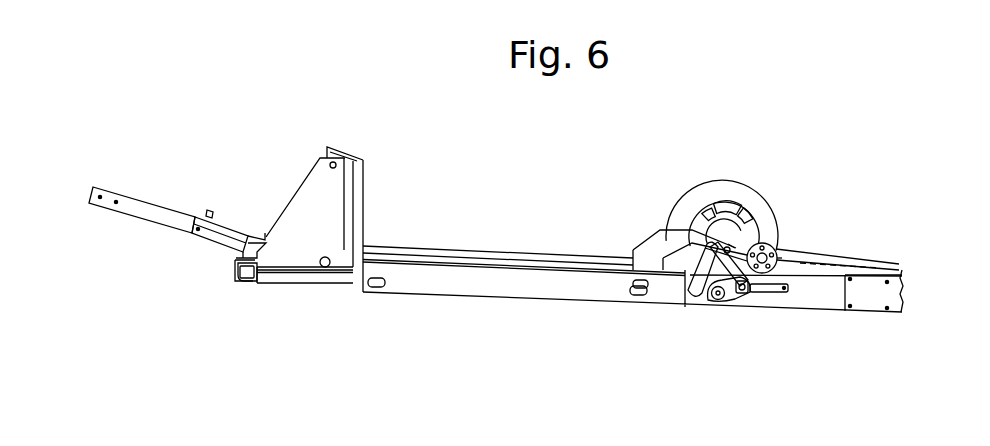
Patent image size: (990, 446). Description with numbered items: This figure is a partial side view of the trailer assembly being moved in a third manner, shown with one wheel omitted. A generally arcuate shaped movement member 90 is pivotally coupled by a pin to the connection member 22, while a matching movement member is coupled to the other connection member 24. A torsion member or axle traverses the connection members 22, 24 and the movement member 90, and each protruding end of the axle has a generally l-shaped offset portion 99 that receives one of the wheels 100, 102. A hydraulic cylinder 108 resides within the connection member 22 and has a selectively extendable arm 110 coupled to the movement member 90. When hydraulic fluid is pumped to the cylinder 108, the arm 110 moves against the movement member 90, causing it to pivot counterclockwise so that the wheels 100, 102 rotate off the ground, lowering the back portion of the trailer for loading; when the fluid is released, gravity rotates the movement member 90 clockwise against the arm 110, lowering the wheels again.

The connection member 24 is at (650, 238).
The wheel 102 is at (713, 212).
The wheel 100 is at (768, 243).
The connection member 22 is at (798, 252).
The hydraulic cylinder 108 is at (845, 268).
The offset portion 99 is at (748, 300).
The movement member 90 is at (726, 297).
The selectively extendable arm 110 is at (706, 290).